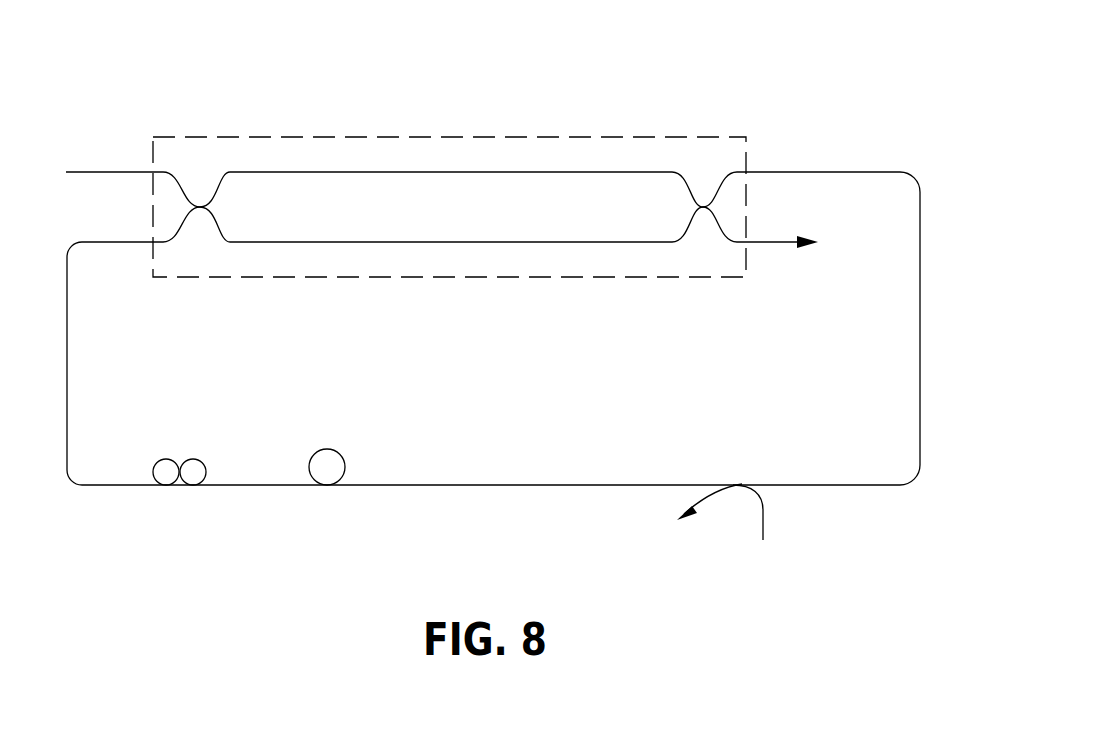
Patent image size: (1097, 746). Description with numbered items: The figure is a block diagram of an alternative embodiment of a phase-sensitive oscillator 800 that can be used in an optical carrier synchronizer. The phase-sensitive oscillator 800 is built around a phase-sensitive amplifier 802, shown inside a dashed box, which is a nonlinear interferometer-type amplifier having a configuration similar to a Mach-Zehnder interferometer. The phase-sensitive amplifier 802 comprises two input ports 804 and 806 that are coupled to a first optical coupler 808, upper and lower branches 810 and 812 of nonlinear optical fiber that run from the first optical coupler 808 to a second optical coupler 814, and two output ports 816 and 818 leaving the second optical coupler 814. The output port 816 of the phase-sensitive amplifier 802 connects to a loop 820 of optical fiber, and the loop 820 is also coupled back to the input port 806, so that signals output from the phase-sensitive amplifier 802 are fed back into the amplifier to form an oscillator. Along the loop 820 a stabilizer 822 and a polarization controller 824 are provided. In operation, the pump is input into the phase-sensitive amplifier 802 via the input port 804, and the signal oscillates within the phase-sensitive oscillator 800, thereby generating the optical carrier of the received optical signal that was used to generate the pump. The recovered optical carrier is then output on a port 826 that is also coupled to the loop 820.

The phase-sensitive oscillator 800 is at (868, 86).
The phase-sensitive amplifier 802 is at (598, 137).
The input port 804 is at (118, 172).
The input port 806 is at (121, 242).
The first optical coupler 808 is at (222, 207).
The upper branch 810 is at (450, 172).
The lower branch 812 is at (450, 242).
The second optical coupler 814 is at (677, 207).
The output port 816 is at (763, 172).
The output port 818 is at (763, 242).
The loop 820 is at (920, 337).
The stabilizer 822 is at (330, 449).
The polarization controller 824 is at (180, 460).
The port 826 is at (770, 518).